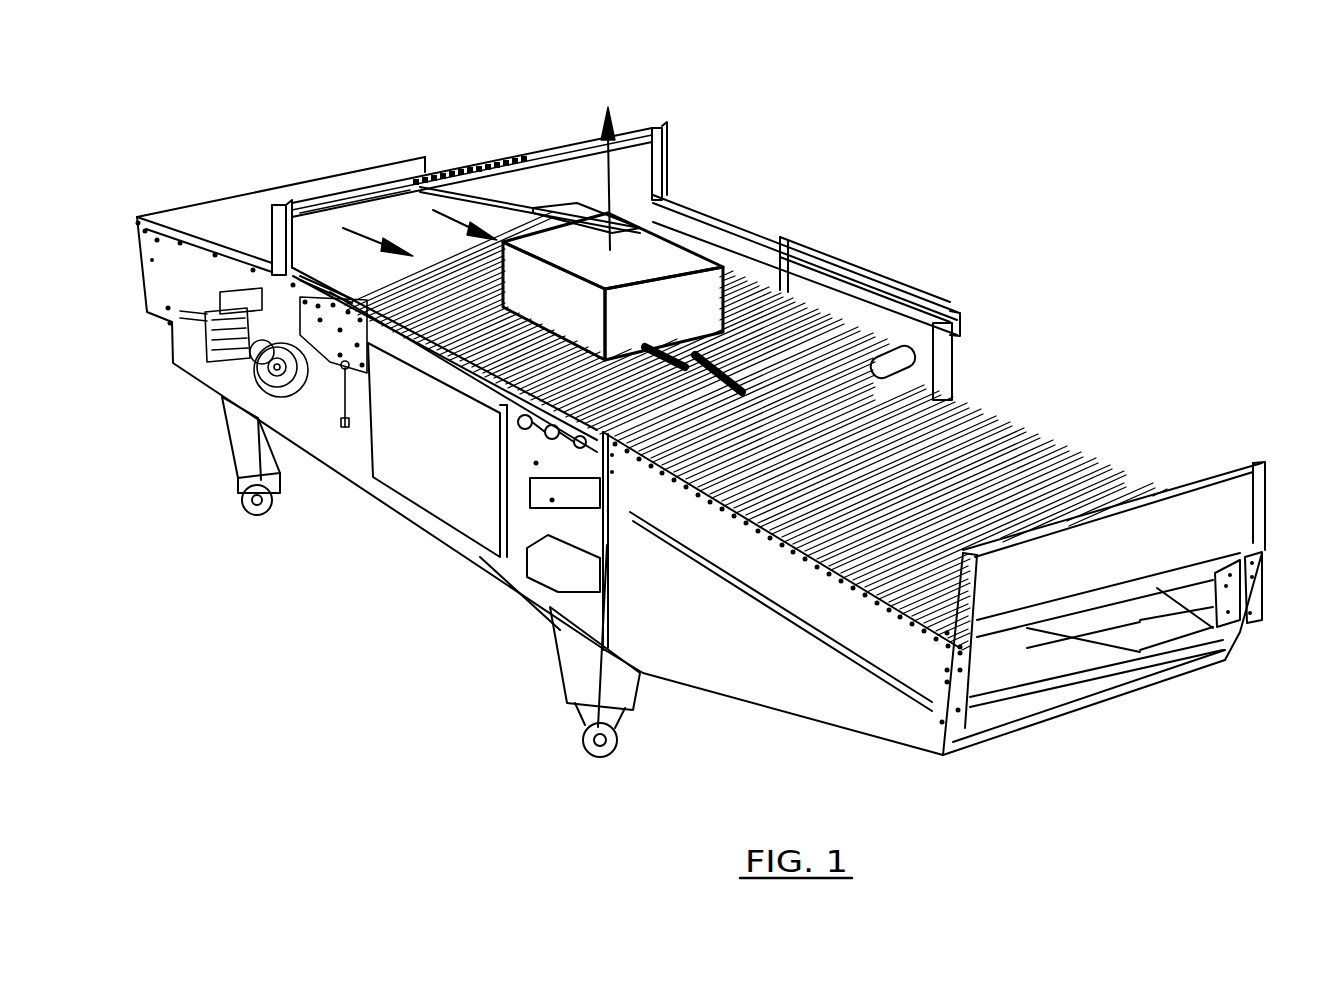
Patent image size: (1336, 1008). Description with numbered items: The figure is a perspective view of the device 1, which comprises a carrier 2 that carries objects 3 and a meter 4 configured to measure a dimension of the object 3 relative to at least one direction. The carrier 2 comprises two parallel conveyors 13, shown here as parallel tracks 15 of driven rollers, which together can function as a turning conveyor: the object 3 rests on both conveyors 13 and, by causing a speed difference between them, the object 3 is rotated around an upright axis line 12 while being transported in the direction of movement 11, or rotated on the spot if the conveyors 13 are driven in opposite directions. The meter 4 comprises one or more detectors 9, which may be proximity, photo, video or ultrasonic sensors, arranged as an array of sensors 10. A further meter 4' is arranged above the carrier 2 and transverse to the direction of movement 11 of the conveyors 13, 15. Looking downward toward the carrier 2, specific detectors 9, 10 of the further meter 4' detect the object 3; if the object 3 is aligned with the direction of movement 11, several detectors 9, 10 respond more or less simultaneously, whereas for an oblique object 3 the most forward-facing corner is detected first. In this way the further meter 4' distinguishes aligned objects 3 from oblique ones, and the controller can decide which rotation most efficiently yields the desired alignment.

The device 1 is at (868, 205).
The carrier 2 is at (641, 185).
The object 3 is at (658, 252).
The meter 4 is at (584, 261).
The further meter 4' is at (318, 183).
The detector 9 is at (490, 163).
The array of sensors 10 is at (472, 174).
The direction of movement 11 is at (408, 223).
The upright axis line 12 is at (600, 145).
The parallel conveyors 13 is at (454, 324).
The parallel tracks 15 is at (772, 310).